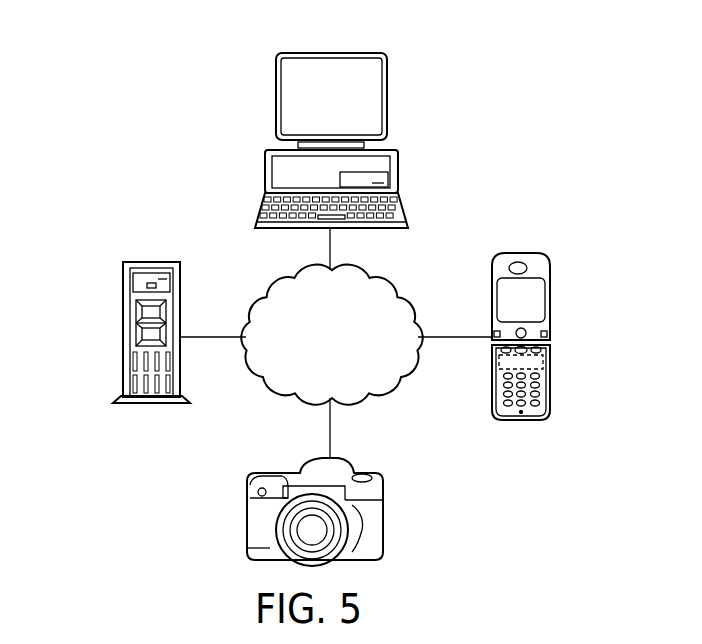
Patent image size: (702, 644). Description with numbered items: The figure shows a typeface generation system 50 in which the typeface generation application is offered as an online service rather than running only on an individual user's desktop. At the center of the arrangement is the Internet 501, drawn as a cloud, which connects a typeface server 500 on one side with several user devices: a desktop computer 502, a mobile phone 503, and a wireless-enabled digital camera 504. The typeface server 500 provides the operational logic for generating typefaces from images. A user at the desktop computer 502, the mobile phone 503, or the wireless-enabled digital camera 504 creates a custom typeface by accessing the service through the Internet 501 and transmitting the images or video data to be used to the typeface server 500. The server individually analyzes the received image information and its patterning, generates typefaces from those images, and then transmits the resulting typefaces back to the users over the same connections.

The typeface generation system 50 is at (118, 125).
The typeface server 500 is at (123, 327).
The Internet 501 is at (392, 393).
The desktop computer 502 is at (276, 97).
The mobile phone 503 is at (550, 297).
The wireless-enabled digital camera 504 is at (247, 527).